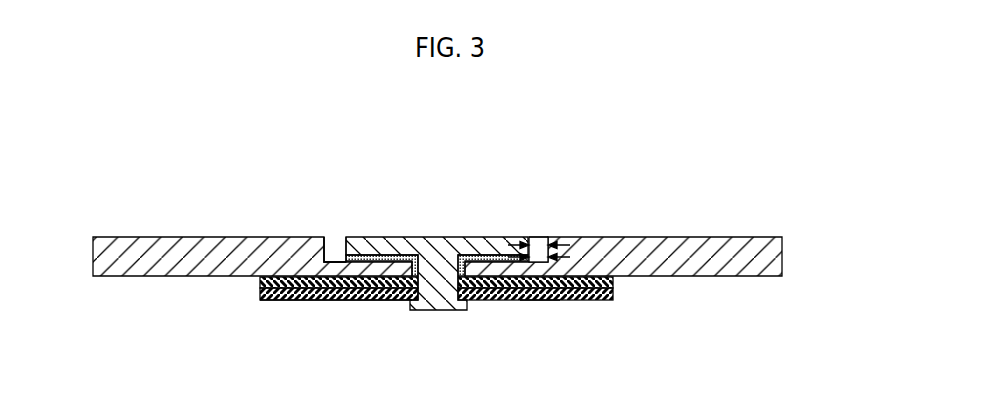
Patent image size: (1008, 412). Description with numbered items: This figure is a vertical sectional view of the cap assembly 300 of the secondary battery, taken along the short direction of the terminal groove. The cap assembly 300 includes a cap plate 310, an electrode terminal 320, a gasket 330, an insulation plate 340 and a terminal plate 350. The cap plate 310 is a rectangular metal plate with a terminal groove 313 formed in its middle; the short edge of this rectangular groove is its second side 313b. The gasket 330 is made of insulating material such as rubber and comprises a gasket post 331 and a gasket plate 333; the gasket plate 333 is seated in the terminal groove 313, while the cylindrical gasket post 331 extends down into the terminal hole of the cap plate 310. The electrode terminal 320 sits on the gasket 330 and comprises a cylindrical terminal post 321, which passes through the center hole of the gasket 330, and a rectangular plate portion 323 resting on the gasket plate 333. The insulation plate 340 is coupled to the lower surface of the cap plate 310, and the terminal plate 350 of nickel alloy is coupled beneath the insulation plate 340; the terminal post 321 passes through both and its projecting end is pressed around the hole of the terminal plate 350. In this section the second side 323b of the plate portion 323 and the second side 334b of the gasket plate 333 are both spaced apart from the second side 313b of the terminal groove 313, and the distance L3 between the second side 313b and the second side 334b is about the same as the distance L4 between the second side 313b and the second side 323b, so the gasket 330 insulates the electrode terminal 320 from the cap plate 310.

The cap assembly 300 is at (132, 207).
The cap plate 310 is at (720, 237).
The terminal groove 313 is at (327, 239).
The second side of terminal groove 313b is at (546, 237).
The electrode terminal 320 is at (510, 176).
The terminal post 321 is at (442, 268).
The plate portion 323 is at (485, 250).
The second side of plate portion 323b is at (336, 253).
The gasket 330 is at (415, 176).
The gasket post 331 is at (428, 262).
The gasket plate 333 is at (375, 257).
The second side of gasket plate 334b is at (312, 302).
The insulation plate 340 is at (613, 283).
The terminal plate 350 is at (602, 303).
The distance between second side of terminal groove and second side of gasket plate L3 is at (538, 283).
The distance between second side of terminal groove and second side of plate portion L4 is at (540, 237).